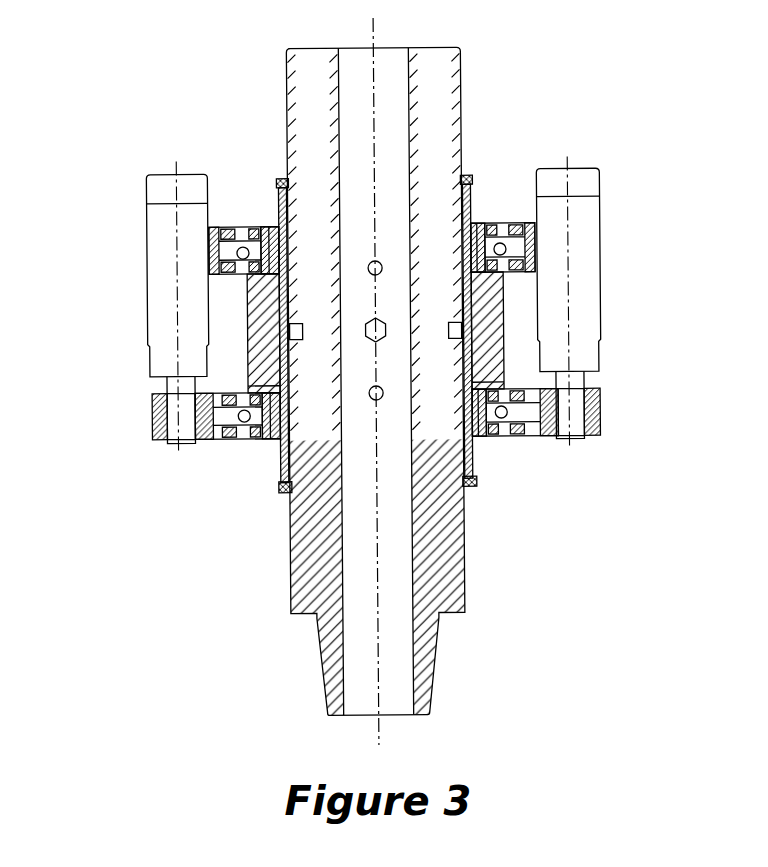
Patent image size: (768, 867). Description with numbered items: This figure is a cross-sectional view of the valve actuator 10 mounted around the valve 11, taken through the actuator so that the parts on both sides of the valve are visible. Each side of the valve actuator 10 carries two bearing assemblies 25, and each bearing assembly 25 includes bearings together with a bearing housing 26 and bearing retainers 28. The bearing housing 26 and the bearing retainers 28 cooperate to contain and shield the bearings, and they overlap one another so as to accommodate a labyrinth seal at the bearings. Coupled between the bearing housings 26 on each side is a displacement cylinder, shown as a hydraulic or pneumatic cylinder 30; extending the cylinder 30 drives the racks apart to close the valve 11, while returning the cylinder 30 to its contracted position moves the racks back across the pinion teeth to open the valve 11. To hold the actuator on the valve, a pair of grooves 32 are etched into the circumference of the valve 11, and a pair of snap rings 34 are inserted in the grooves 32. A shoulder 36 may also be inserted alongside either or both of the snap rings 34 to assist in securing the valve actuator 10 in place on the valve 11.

The valve actuator 10 is at (647, 241).
The valve 11 is at (292, 596).
The bearing assembly 25 is at (263, 226).
The bearing housing 26 is at (212, 258).
The bearing retainer 28 is at (237, 226).
The cylinder 30 is at (148, 312).
The groove 32 is at (465, 180).
The snap ring 34 is at (468, 176).
The shoulder 36 is at (285, 482).